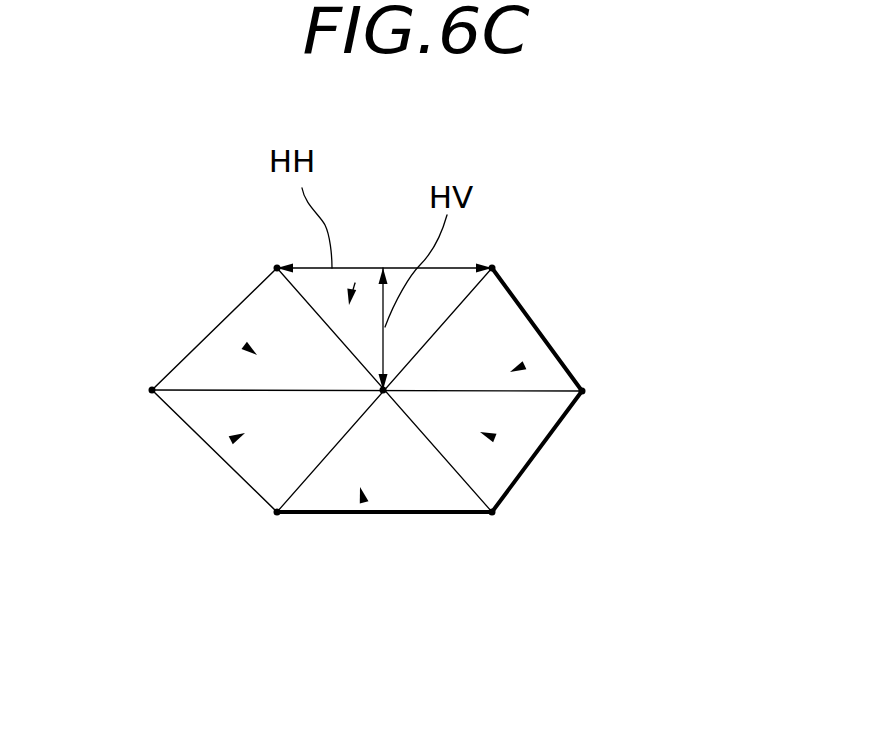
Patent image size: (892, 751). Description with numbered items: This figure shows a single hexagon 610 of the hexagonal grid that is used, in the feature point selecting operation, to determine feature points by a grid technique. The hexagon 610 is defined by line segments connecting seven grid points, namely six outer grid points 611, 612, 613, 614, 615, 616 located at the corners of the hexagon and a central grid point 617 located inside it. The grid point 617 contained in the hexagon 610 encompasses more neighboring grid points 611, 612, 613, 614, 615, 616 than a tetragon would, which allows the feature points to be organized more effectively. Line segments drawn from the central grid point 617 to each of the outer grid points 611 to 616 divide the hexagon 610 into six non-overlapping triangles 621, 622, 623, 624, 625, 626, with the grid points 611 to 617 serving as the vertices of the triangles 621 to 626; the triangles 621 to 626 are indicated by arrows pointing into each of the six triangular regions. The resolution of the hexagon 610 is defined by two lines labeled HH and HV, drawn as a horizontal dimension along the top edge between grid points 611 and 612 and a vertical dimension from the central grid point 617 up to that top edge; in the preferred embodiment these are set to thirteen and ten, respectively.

The hexagon 610 is at (535, 318).
The grid point 611 is at (277, 268).
The grid point 612 is at (492, 268).
The grid point 613 is at (582, 391).
The grid point 614 is at (492, 512).
The grid point 615 is at (277, 512).
The grid point 616 is at (152, 390).
The grid point 617 is at (383, 392).
The triangle 621 is at (355, 283).
The triangle 622 is at (512, 371).
The triangle 623 is at (482, 433).
The triangle 624 is at (361, 490).
The triangle 625 is at (243, 434).
The triangle 626 is at (255, 354).